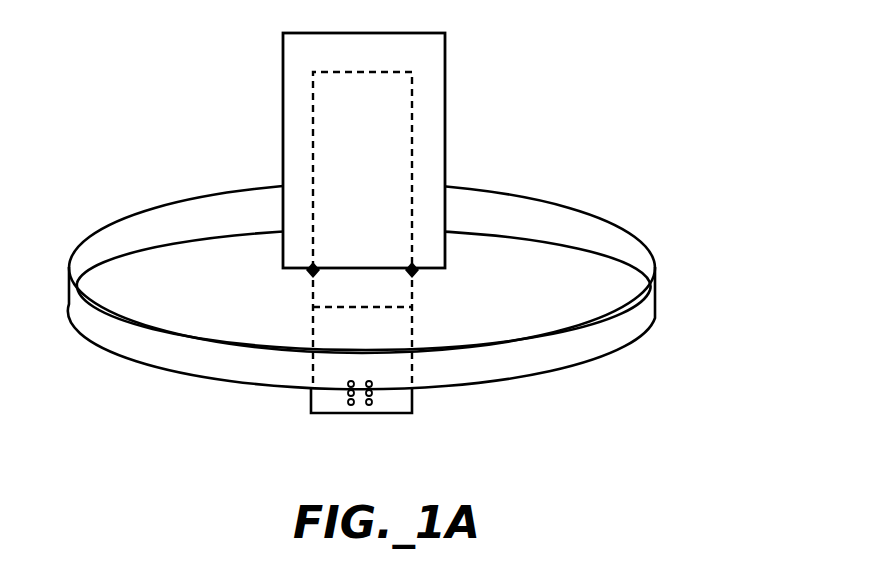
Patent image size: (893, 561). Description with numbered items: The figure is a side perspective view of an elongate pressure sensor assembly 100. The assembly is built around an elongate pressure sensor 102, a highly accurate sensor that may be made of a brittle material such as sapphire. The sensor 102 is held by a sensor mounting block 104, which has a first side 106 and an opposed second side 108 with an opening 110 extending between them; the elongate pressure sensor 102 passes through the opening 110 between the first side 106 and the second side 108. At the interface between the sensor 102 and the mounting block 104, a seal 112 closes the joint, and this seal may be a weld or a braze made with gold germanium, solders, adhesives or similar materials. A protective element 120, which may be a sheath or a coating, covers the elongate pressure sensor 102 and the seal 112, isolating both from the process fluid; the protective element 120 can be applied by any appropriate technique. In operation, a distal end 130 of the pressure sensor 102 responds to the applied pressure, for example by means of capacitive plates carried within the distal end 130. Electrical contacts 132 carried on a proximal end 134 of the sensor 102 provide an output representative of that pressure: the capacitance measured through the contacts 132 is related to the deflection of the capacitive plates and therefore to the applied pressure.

The pressure sensor assembly 100 is at (595, 68).
The elongate pressure sensor 102 is at (400, 103).
The sensor mounting block 104 is at (464, 188).
The first side 106 is at (509, 255).
The second side 108 is at (505, 384).
The opening 110 is at (326, 288).
The seal 112 is at (414, 274).
The protective element 120 is at (432, 140).
The distal end 130 is at (328, 140).
The electrical contacts 132 is at (350, 403).
The proximal end 134 is at (323, 398).